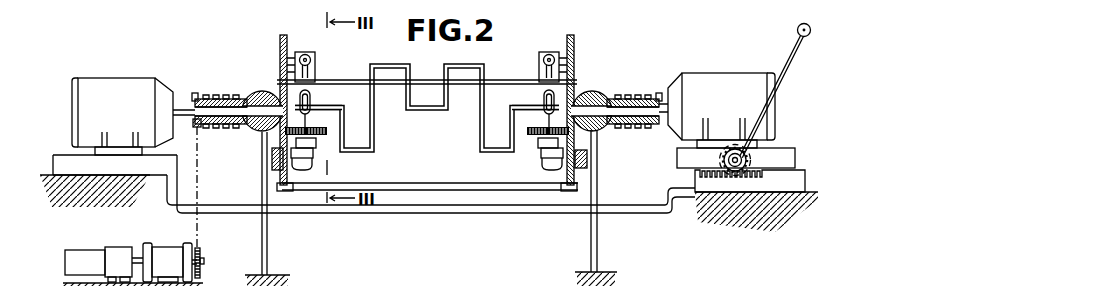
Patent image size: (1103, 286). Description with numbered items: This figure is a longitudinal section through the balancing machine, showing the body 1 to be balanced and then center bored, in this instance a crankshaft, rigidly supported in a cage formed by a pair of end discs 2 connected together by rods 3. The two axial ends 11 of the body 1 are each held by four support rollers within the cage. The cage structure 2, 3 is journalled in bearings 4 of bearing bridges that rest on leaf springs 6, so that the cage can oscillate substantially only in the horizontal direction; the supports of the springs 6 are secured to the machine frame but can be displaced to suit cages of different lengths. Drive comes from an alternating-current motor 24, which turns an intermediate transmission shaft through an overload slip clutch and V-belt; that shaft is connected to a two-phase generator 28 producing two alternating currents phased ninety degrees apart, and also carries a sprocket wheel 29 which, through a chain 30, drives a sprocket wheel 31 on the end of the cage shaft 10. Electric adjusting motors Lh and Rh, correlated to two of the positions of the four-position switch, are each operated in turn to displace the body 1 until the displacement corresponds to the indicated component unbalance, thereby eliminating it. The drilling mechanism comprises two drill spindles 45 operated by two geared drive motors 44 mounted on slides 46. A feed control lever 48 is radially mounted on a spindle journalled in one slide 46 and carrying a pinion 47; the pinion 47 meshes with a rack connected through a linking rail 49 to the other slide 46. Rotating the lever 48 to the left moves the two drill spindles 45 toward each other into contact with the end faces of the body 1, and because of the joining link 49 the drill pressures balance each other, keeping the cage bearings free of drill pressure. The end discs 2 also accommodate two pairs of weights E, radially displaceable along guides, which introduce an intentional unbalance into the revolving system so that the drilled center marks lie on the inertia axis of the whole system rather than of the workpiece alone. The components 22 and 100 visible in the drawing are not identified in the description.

The body 1 is at (378, 68).
The discs 2 is at (568, 36).
The rods 3 is at (423, 80).
The bearings 4 is at (257, 90).
The leaf springs 6 is at (263, 188).
The cage shaft 10 is at (201, 97).
The axial ends 11 is at (322, 109).
The pivot bracket 22 is at (319, 44).
The alternating-current motor 24 is at (166, 243).
The two-phase generator 28 is at (75, 250).
The sprocket wheel 29 is at (203, 256).
The chain 30 is at (200, 176).
The sprocket wheel 31 is at (201, 137).
The geared drive motors 44 is at (128, 85).
The drill spindles 45 is at (183, 108).
The slides 46 is at (65, 155).
The pinion 47 is at (748, 167).
The feed control lever 48 is at (786, 60).
The linking rail 49 is at (302, 215).
The threaded sleeve 100 is at (230, 97).
The weights E is at (272, 158).
The adjusting motor Lh is at (313, 166).
The adjusting motor Rh is at (547, 157).